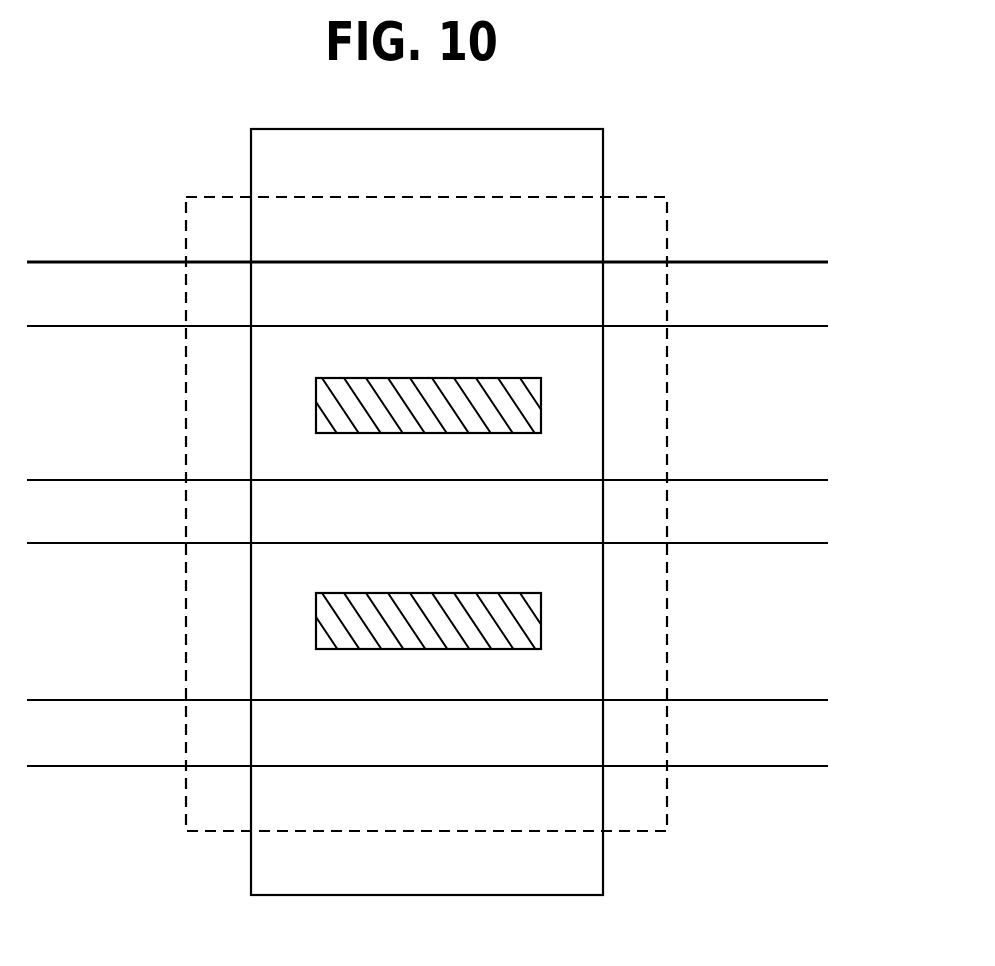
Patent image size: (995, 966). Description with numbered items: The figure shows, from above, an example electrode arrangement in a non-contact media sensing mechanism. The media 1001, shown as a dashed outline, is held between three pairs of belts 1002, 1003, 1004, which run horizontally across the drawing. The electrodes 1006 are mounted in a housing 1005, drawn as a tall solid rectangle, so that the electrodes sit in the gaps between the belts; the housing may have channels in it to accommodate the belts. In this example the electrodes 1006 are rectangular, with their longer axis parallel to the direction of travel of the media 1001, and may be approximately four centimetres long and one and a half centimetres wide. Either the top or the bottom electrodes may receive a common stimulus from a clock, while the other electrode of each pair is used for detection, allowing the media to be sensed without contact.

The media 1001 is at (667, 225).
The belt pair 1002 is at (773, 326).
The belt pair 1003 is at (773, 543).
The belt pair 1004 is at (775, 766).
The housing 1005 is at (252, 877).
The electrodes 1006 is at (440, 378).